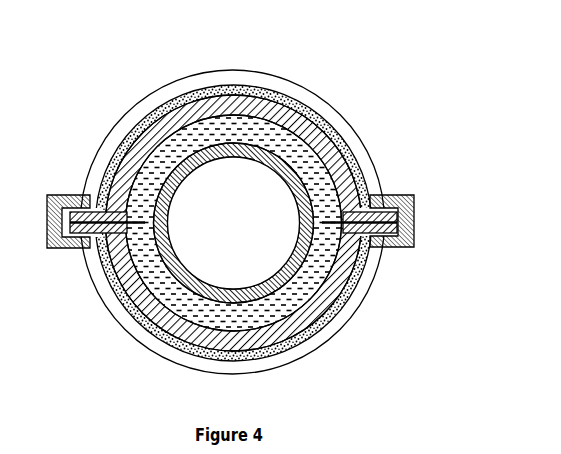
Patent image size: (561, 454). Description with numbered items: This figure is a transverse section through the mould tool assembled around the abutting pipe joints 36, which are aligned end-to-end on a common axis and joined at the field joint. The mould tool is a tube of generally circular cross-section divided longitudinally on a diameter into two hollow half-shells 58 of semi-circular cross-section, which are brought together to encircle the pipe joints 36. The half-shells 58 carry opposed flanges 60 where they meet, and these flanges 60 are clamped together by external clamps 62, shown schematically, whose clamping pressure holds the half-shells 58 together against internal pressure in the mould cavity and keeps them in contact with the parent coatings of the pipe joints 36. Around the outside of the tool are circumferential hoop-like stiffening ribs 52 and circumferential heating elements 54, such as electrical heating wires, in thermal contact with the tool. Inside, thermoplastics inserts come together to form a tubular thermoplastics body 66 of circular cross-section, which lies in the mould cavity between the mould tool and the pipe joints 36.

The pipe joints 36 is at (288, 183).
The stiffening ribs 52 is at (143, 342).
The heating elements 54 is at (197, 92).
The half-shells 58 is at (270, 101).
The flanges 60 is at (90, 211).
The clamps 62 is at (68, 249).
The tubular thermoplastics body 66 is at (203, 160).